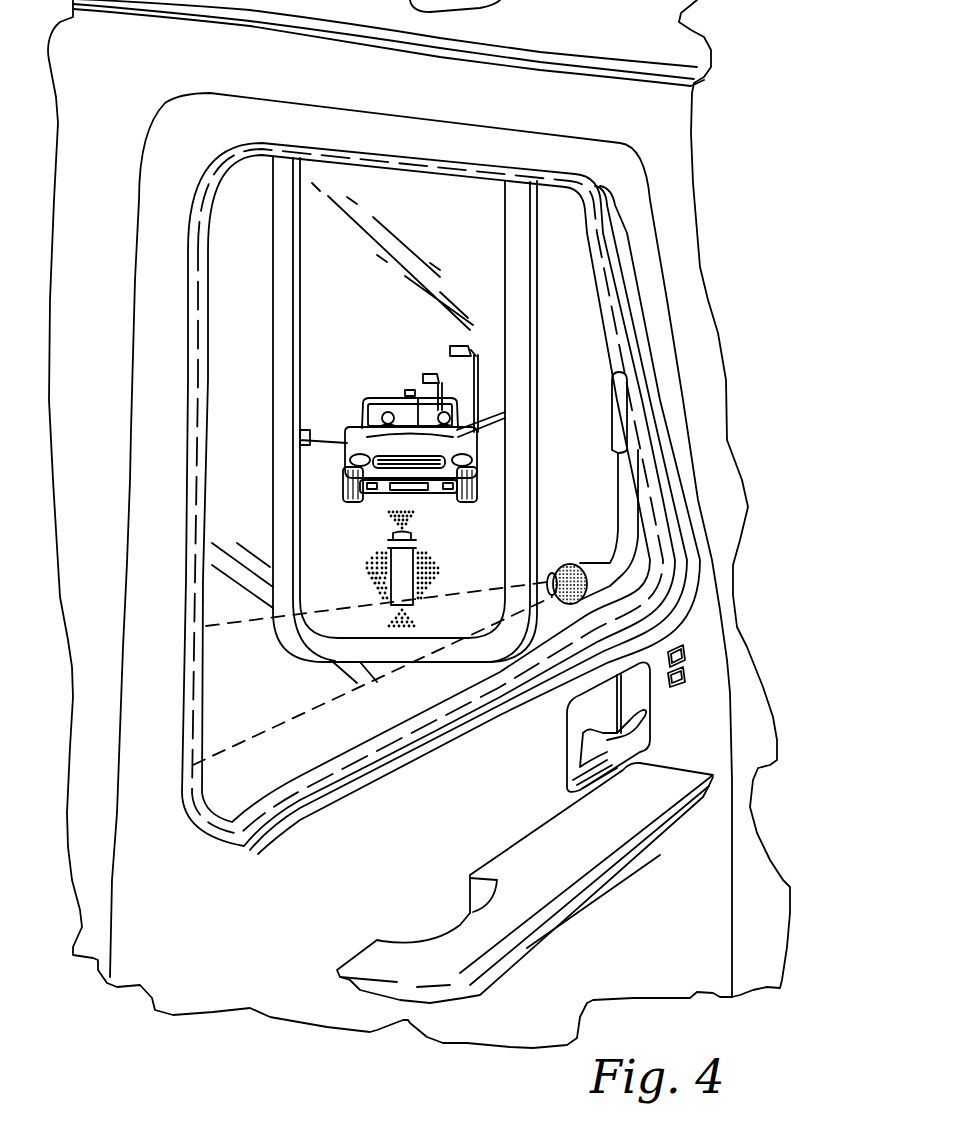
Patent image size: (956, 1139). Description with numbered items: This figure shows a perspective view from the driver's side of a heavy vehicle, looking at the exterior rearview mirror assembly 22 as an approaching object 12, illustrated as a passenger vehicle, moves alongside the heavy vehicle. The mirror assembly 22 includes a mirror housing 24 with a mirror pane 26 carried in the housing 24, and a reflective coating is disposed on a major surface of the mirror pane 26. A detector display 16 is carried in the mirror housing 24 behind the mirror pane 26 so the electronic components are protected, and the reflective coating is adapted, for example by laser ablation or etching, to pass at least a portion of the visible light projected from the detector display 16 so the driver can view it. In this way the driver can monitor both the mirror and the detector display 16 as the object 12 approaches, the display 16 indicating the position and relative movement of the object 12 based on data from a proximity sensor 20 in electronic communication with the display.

The object 12 is at (357, 447).
The detector display 16 is at (375, 608).
The proximity sensor 20 is at (614, 566).
The exterior rearview mirror assembly 22 is at (552, 322).
The mirror housing 24 is at (283, 233).
The mirror pane 26 is at (476, 224).